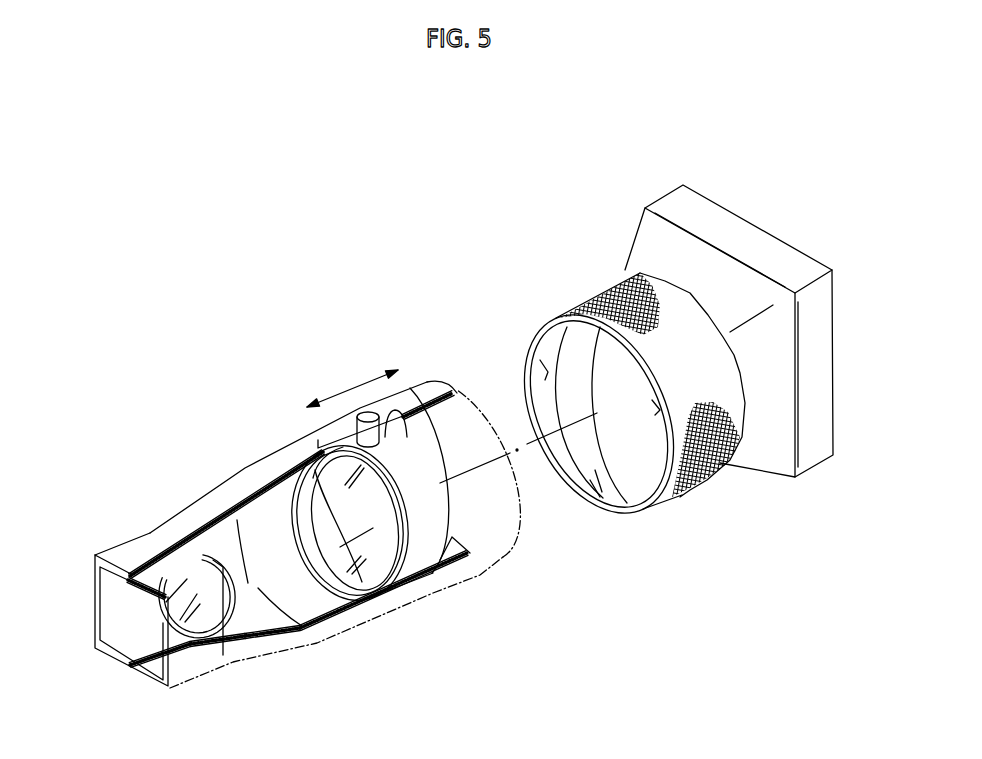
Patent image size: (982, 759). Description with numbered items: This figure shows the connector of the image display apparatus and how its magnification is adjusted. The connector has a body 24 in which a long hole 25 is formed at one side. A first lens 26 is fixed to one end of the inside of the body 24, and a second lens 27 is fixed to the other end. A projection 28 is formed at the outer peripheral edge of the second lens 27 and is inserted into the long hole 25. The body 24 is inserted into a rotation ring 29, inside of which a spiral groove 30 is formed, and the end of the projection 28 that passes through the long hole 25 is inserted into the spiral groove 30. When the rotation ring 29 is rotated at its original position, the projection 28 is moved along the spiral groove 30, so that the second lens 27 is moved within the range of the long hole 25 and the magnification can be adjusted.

The body 24 is at (142, 548).
The long hole 25 is at (327, 428).
The first lens 26 is at (192, 598).
The second lens 27 is at (342, 545).
The projection 28 is at (367, 413).
The rotation ring 29 is at (566, 313).
The spiral groove 30 is at (590, 482).